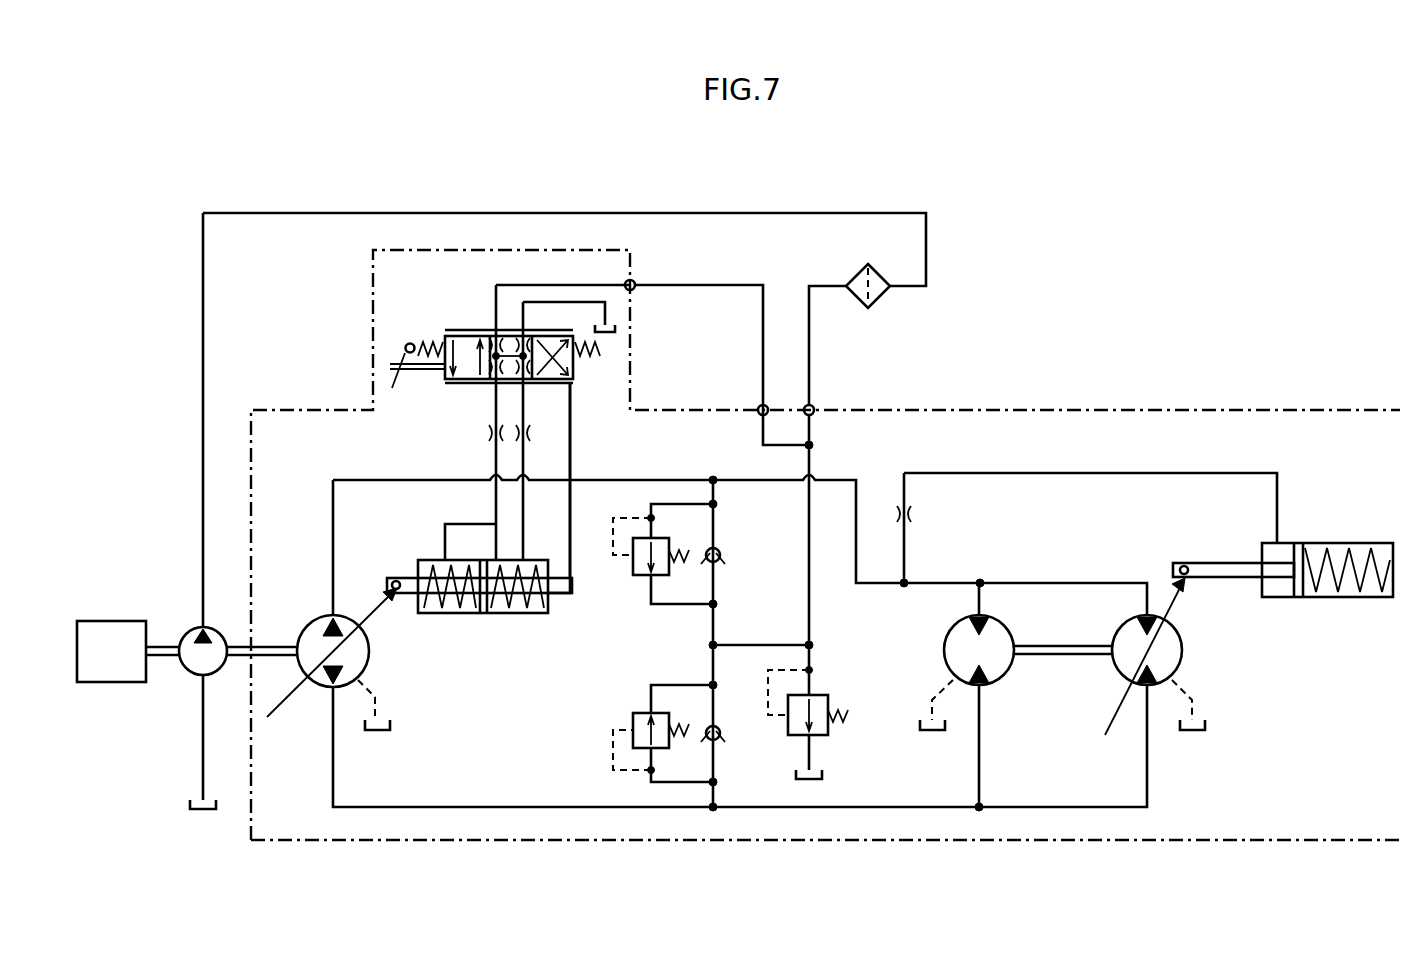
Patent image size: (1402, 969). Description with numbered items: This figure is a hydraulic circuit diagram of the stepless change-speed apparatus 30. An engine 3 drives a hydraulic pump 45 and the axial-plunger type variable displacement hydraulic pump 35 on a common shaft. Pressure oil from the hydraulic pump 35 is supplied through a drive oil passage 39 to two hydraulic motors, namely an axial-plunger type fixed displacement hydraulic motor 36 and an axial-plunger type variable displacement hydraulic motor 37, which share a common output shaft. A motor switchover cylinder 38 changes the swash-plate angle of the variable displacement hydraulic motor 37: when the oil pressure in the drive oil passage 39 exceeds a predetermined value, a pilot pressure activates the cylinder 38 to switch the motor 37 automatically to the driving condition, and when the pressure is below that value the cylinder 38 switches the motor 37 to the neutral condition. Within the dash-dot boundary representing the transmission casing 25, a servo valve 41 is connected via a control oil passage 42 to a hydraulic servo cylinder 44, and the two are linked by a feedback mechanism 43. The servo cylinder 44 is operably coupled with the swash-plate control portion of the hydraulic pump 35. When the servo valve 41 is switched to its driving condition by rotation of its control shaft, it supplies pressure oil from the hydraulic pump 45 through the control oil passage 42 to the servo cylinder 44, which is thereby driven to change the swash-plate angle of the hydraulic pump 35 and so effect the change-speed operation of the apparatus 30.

The engine 3 is at (111, 651).
The transmission casing 25 is at (970, 410).
The stepless change-speed apparatus 30 is at (1122, 459).
The variable displacement hydraulic pump 35 is at (315, 620).
The fixed displacement hydraulic motor 36 is at (945, 648).
The variable displacement hydraulic motor 37 is at (1180, 650).
The motor switchover cylinder 38 is at (1330, 545).
The drive oil passage 39 is at (857, 513).
The servo valve 41 is at (467, 333).
The control oil passage 42 is at (523, 410).
The feedback mechanism 43 is at (577, 447).
The hydraulic servo cylinder 44 is at (452, 613).
The hydraulic pump 45 is at (190, 632).